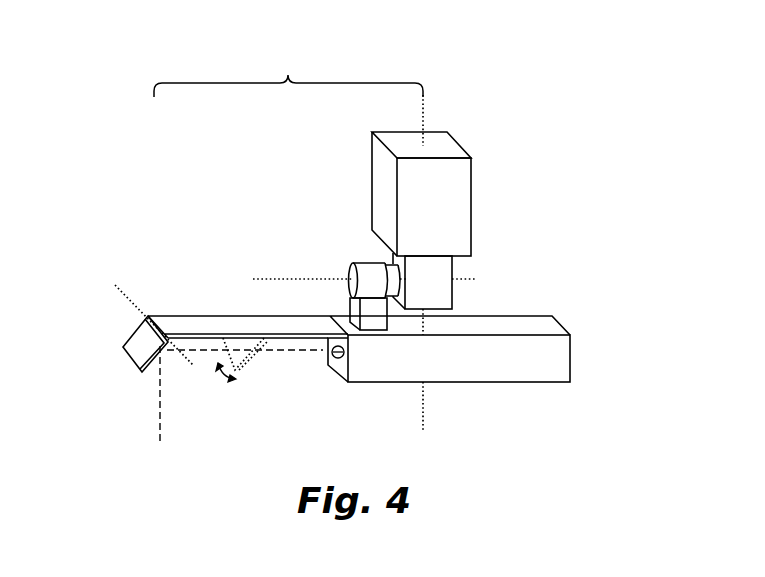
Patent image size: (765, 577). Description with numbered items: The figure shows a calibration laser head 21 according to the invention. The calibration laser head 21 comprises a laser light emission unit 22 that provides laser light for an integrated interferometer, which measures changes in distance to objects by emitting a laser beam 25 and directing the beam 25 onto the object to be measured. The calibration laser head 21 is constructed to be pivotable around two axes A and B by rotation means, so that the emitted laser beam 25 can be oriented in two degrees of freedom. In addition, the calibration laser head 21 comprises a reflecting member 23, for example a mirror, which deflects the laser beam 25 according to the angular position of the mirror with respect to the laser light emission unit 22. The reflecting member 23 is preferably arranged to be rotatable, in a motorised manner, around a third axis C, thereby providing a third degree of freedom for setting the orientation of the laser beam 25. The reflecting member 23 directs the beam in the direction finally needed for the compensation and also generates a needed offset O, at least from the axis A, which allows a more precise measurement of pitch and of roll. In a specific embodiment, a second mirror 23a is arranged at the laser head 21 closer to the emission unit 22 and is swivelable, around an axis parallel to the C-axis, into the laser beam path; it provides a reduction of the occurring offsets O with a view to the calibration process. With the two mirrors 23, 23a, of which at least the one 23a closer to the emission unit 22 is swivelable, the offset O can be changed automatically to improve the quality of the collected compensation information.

The calibration laser head 21 is at (537, 242).
The laser light emission unit 22 is at (513, 372).
The reflecting member 23 is at (150, 367).
The second mirror 23a is at (242, 363).
The laser beam 25 is at (313, 350).
The axis A is at (423, 121).
The axis B is at (272, 277).
The third axis C is at (123, 298).
The offset O is at (288, 69).